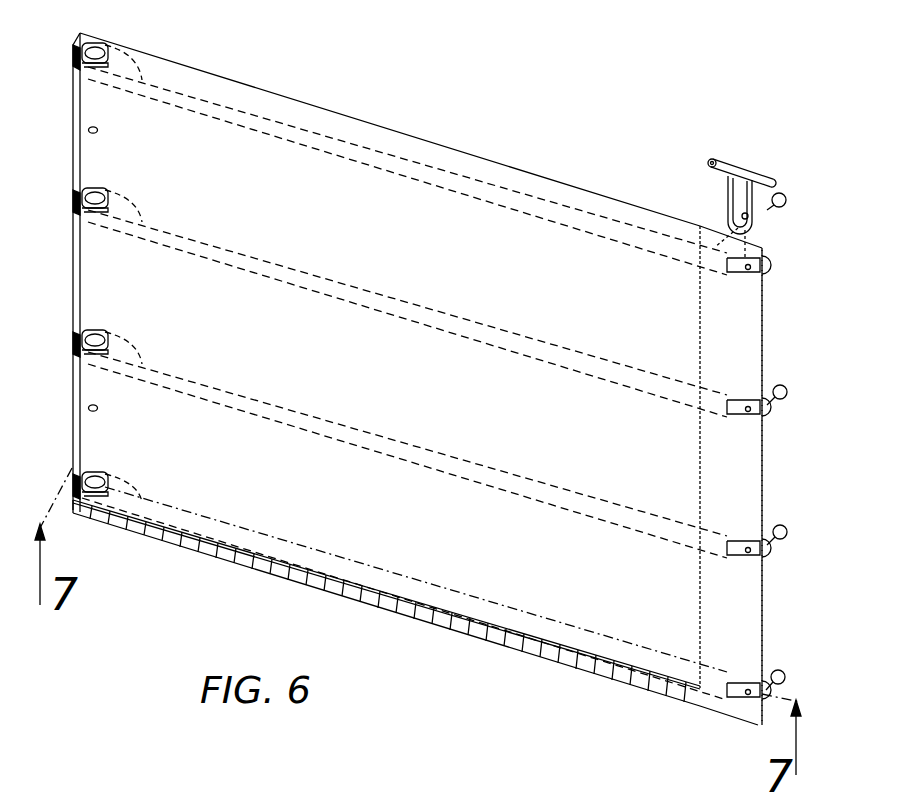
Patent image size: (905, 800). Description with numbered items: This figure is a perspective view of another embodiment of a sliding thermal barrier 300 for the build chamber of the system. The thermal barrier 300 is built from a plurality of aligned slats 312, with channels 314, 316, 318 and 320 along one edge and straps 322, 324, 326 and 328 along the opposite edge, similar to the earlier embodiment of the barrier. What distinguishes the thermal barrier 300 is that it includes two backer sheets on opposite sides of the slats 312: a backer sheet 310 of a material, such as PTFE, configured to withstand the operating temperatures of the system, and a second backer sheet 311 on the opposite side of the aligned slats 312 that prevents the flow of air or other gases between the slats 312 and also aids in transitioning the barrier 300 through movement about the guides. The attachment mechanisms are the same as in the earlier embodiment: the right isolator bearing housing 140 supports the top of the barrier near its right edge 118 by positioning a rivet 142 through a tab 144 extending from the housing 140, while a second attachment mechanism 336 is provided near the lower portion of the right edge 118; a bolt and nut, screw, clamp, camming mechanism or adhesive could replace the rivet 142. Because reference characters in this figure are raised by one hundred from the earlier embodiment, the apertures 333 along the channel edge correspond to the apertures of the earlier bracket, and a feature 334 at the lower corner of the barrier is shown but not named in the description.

The thermal barrier 300 is at (492, 106).
The backer sheet 310 is at (742, 320).
The second backer sheet 311 is at (345, 128).
The slats 312 is at (210, 78).
The channel 314 is at (122, 52).
The channel 316 is at (120, 195).
The channel 318 is at (120, 337).
The channel 320 is at (120, 478).
The strap 322 is at (762, 262).
The strap 324 is at (742, 397).
The strap 326 is at (737, 540).
The strap 328 is at (740, 683).
The holes 333 is at (89, 127).
The bottom corner strip 334 is at (765, 713).
The attachment mechanism 336 is at (781, 670).
The right edge 118 is at (763, 596).
The right isolator bearing housing 140 is at (735, 165).
The rivet 142 is at (781, 194).
The tab 144 is at (758, 213).